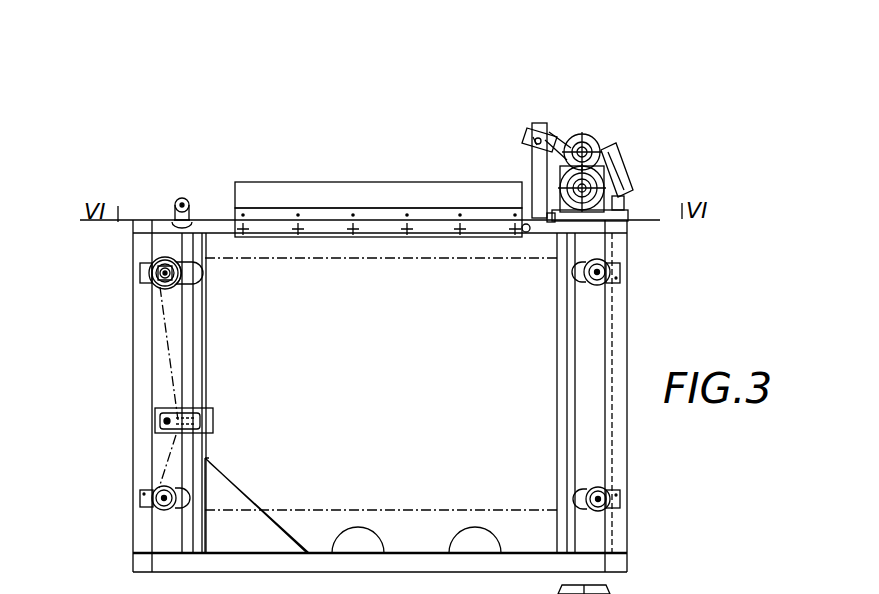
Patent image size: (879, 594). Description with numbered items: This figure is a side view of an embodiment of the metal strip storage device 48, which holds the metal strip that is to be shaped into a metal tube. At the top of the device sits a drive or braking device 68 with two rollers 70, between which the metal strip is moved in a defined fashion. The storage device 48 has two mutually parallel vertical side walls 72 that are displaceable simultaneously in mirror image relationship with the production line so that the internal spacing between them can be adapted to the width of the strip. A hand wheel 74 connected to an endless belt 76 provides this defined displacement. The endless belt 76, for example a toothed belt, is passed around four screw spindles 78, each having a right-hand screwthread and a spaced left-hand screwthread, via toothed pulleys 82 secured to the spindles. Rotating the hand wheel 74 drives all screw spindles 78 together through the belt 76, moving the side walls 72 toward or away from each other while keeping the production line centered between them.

The metal strip storage device 48 is at (380, 106).
The drive or braking device 68 is at (597, 114).
The rollers 70 is at (596, 131).
The side walls 72 is at (470, 383).
The hand wheel 74 is at (150, 287).
The endless belt 76 is at (232, 256).
The screw spindles 78 is at (150, 262).
The toothed pulleys 82 is at (608, 262).